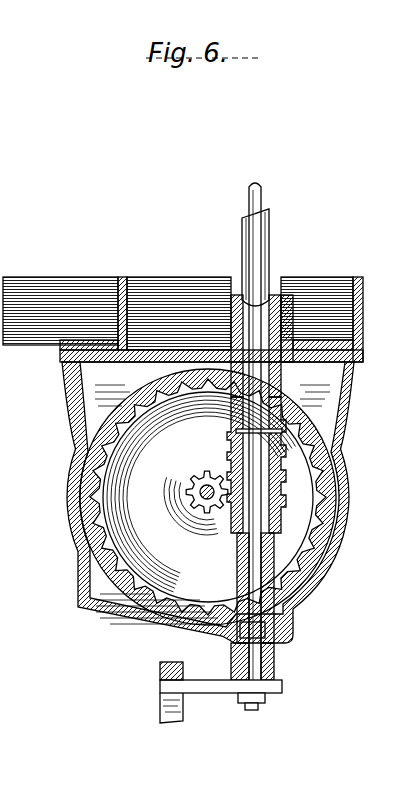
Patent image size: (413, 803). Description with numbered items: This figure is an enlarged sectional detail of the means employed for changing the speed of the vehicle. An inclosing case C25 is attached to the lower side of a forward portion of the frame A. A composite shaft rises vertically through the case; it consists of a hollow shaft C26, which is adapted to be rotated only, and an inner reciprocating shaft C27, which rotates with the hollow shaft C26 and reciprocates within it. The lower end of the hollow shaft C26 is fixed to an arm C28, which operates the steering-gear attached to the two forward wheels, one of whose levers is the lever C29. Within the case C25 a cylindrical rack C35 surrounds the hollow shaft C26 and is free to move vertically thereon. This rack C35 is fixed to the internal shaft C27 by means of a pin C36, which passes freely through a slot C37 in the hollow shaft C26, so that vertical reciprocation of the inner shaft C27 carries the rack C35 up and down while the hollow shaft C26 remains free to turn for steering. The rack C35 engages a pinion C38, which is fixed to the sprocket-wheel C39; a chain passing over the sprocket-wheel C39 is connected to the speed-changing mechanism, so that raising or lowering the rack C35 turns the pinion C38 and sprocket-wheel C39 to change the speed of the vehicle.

The frame A is at (150, 300).
The inclosing case C25 is at (337, 557).
The hollow shaft C26 is at (252, 241).
The reciprocating shaft C27 is at (255, 182).
The arm C28 is at (220, 685).
The lever C29 is at (170, 709).
The cylindrical rack C35 is at (233, 527).
The pin C36 is at (236, 431).
The slot C37 is at (230, 447).
The pinion C38 is at (195, 488).
The sprocket-wheel C39 is at (95, 559).